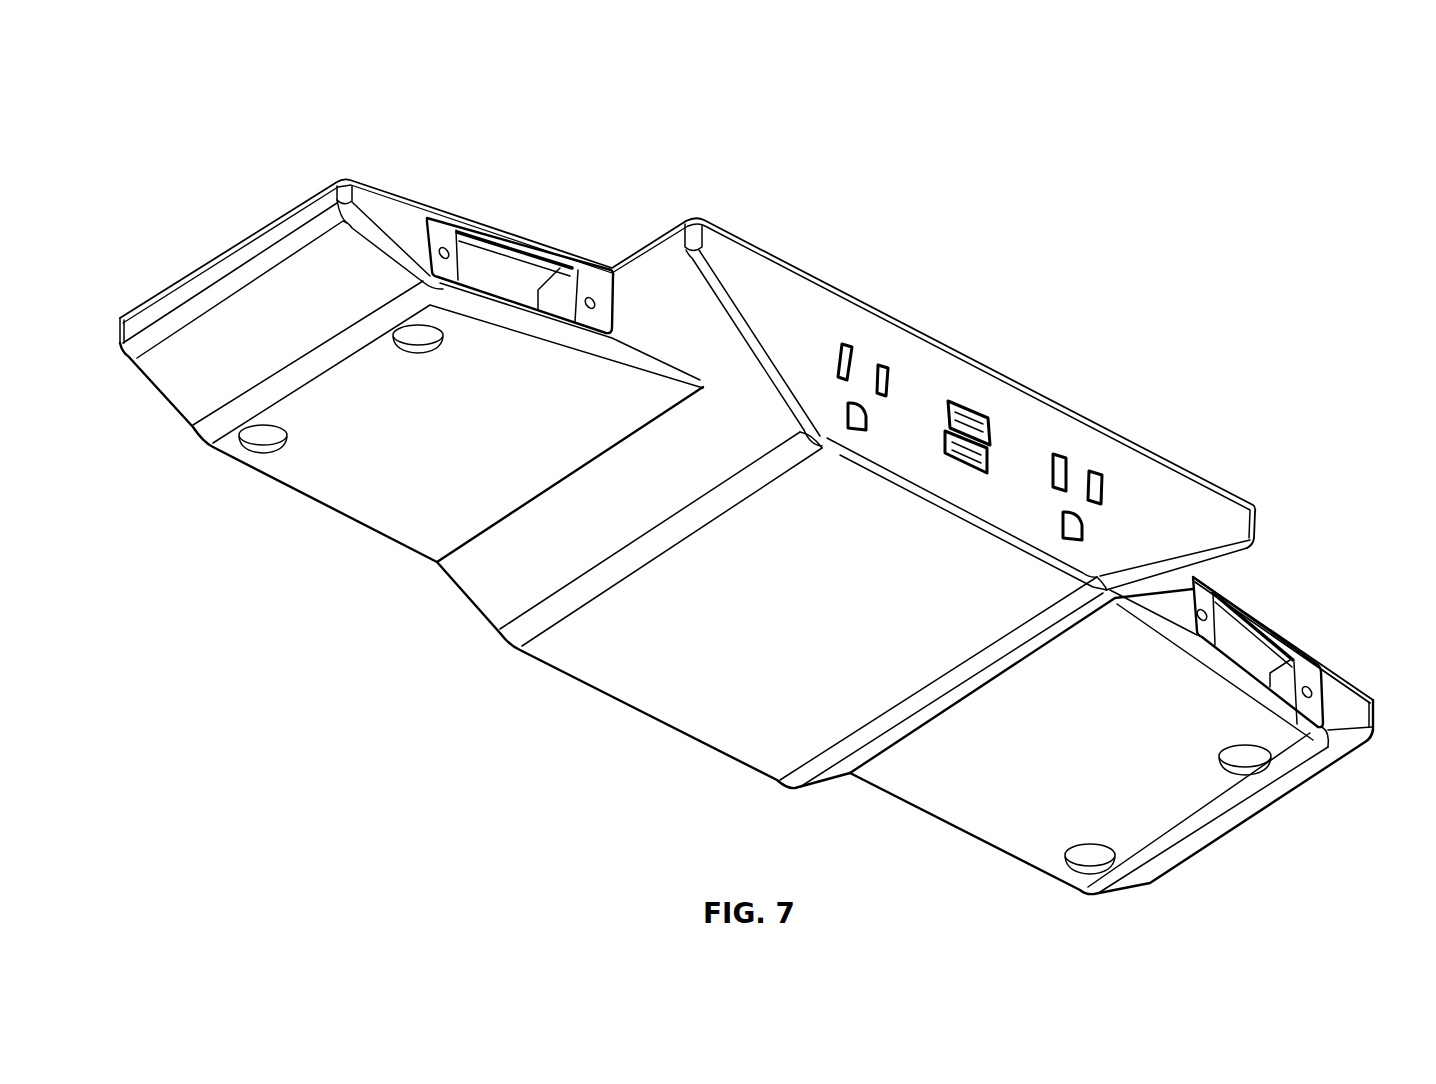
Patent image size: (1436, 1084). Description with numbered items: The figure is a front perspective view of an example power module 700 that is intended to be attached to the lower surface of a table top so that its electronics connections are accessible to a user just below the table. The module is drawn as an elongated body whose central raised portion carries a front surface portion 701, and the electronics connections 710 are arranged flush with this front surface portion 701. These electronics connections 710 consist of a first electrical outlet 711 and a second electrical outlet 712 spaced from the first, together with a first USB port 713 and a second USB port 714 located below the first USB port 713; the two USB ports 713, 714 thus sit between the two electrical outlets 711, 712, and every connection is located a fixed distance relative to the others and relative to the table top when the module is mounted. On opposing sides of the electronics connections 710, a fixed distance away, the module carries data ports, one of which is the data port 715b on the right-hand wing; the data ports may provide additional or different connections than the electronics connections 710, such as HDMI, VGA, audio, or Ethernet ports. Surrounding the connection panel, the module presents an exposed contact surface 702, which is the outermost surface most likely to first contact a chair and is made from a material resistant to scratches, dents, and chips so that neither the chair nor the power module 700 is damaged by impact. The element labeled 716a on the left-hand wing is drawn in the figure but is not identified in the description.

The power module 700 is at (203, 114).
The front surface portion 701 is at (1032, 422).
The contact surface 702 is at (493, 580).
The electronics connections 710 is at (880, 363).
The first electrical outlet 711 is at (838, 362).
The second electrical outlet 712 is at (1092, 475).
The first USB port 713 is at (993, 423).
The second USB port 714 is at (963, 463).
The data port 715b is at (1342, 673).
The mounting bracket 716a is at (497, 238).